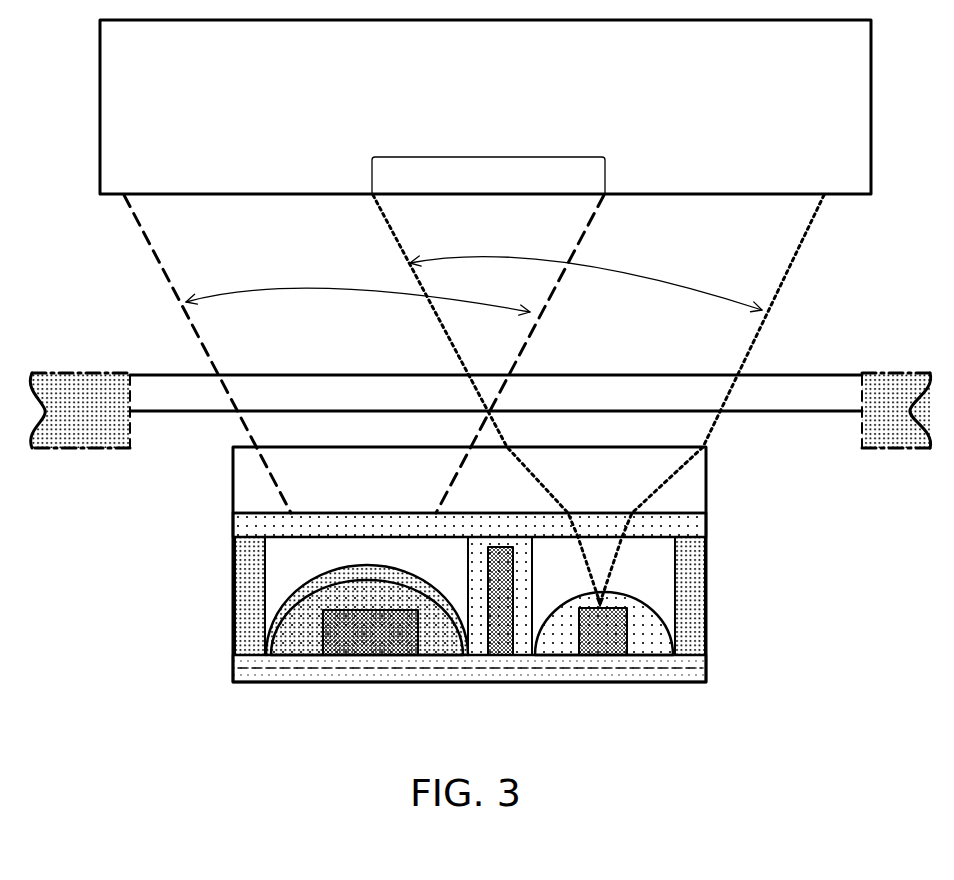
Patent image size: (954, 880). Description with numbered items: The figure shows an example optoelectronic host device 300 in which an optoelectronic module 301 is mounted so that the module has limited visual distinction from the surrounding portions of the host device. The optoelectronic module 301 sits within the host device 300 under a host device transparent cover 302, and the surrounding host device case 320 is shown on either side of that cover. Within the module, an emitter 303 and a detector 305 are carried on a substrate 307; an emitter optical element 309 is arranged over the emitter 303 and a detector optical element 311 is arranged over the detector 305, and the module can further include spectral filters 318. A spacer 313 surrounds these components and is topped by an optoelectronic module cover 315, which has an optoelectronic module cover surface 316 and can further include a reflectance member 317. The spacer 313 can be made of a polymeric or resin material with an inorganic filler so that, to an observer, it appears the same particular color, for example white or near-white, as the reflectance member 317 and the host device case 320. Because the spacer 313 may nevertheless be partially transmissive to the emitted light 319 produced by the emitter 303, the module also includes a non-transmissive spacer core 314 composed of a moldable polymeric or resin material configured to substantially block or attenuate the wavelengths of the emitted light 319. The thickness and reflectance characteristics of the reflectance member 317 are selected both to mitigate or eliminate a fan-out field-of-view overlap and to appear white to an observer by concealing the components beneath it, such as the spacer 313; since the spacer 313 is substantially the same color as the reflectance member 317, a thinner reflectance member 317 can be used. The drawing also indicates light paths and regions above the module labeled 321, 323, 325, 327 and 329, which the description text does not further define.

The host device 300 is at (40, 348).
The optoelectronic module 301 is at (140, 716).
The host device transparent cover 302 is at (188, 400).
The emitter 303 is at (612, 645).
The detector 305 is at (345, 640).
The substrate 307 is at (232, 670).
The emitter optical element 309 is at (641, 612).
The detector optical element 311 is at (284, 642).
The spacer 313 is at (690, 572).
The non-transmissive spacer core 314 is at (484, 637).
The optoelectronic module cover 315 is at (250, 470).
The optoelectronic module cover surface 316 is at (390, 511).
The reflectance member 317 is at (695, 526).
The spectral filters 318 is at (308, 580).
The emitted light 319 is at (762, 331).
The host device case 320 is at (68, 432).
The light travel distance 321 is at (663, 268).
The target object 323 is at (226, 81).
The ambient light 325 is at (246, 187).
The reflected light span 327 is at (244, 291).
The illuminated region 329 is at (417, 157).